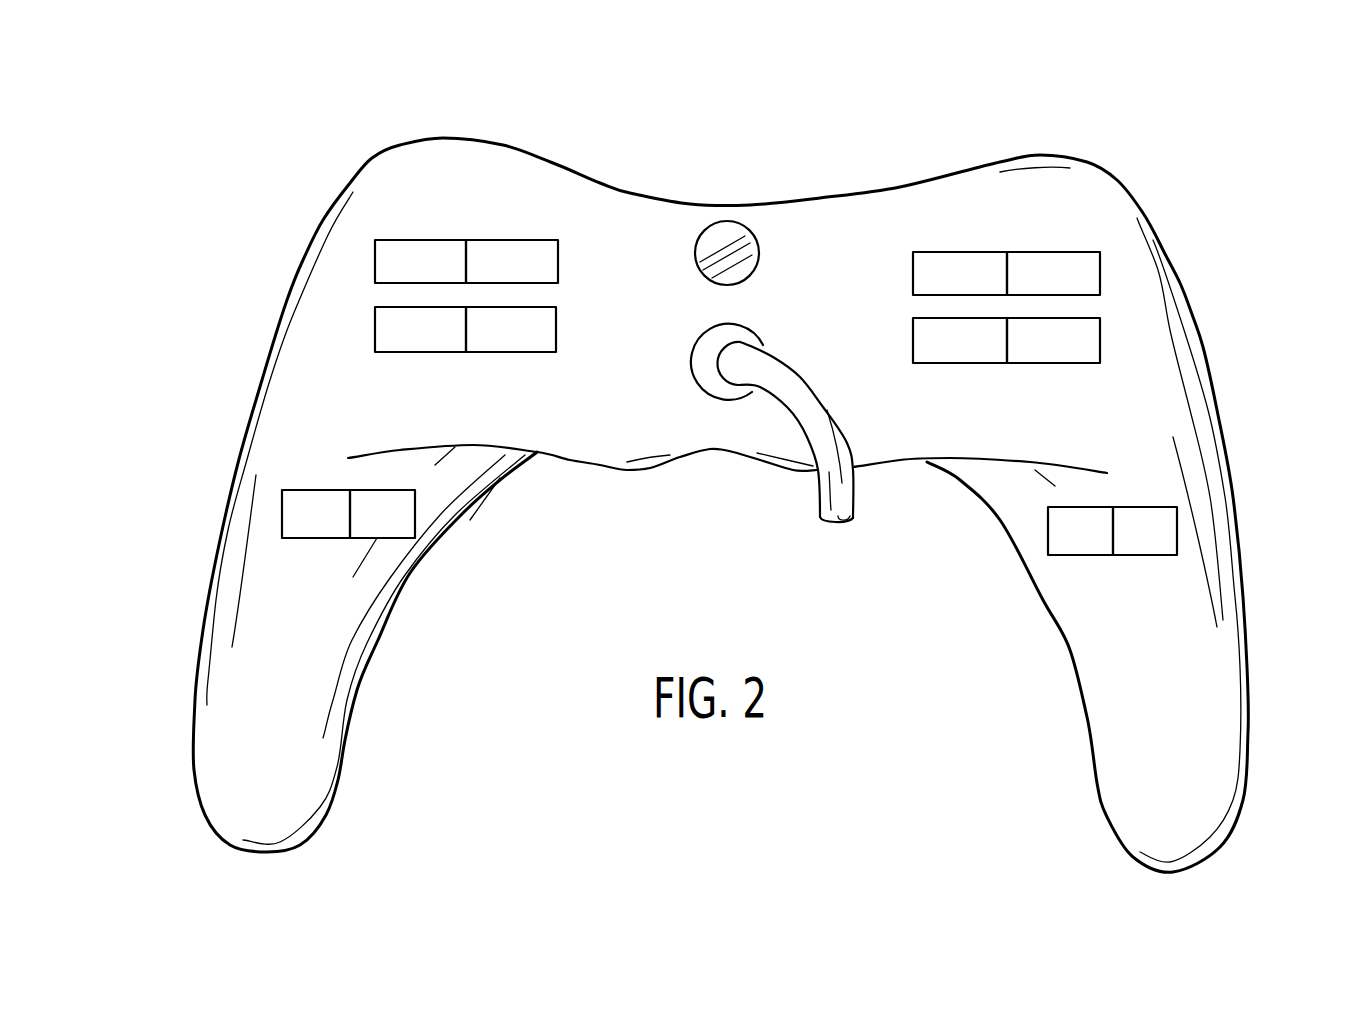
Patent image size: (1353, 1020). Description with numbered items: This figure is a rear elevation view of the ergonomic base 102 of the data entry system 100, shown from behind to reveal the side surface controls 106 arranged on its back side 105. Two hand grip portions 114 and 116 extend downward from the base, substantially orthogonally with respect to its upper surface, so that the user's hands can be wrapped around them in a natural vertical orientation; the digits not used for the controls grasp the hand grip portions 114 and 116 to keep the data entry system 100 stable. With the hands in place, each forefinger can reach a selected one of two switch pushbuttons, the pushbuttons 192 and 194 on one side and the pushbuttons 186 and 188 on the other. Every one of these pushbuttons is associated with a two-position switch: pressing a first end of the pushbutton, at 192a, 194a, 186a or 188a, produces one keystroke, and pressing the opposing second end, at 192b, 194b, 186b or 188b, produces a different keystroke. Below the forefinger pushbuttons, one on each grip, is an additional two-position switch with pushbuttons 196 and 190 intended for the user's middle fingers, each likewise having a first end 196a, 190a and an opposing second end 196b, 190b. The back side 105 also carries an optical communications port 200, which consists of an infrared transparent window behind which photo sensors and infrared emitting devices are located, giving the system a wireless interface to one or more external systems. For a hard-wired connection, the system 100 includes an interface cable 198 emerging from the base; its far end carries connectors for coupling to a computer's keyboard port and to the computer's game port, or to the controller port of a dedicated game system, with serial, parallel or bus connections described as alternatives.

The data entry system 100 is at (911, 108).
The ergonomic base 102 is at (1090, 158).
The back side 105 is at (1028, 190).
The side surface controls 106 is at (290, 193).
The hand grip portion 114 is at (1220, 682).
The hand grip portion 116 is at (223, 643).
The switch pushbutton 186 is at (1084, 203).
The first end of switch pushbutton 186a is at (1075, 278).
The second end of switch pushbutton 186b is at (960, 258).
The switch pushbutton 188 is at (1050, 269).
The first end of switch pushbutton 188a is at (1073, 352).
The second end of switch pushbutton 188b is at (913, 330).
The switch pushbutton 190 is at (1118, 539).
The first end of switch pushbutton 190a is at (1157, 542).
The second end of switch pushbutton 190b is at (1060, 527).
The switch pushbutton 192 is at (432, 181).
The first end of switch pushbutton 192a is at (418, 253).
The second end of switch pushbutton 192b is at (523, 250).
The switch pushbutton 194 is at (429, 253).
The first end of switch pushbutton 194a is at (387, 332).
The second end of switch pushbutton 194b is at (542, 327).
The switch pushbutton 196 is at (324, 539).
The first end of switch pushbutton 196a is at (300, 516).
The second end of switch pushbutton 196b is at (397, 522).
The interface cable 198 is at (815, 492).
The optical communications port 200 is at (733, 226).